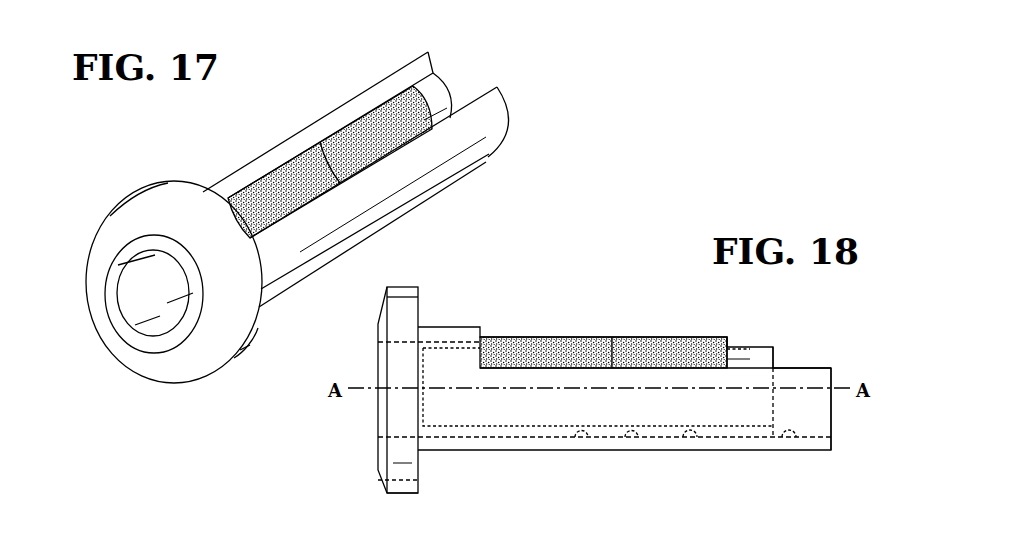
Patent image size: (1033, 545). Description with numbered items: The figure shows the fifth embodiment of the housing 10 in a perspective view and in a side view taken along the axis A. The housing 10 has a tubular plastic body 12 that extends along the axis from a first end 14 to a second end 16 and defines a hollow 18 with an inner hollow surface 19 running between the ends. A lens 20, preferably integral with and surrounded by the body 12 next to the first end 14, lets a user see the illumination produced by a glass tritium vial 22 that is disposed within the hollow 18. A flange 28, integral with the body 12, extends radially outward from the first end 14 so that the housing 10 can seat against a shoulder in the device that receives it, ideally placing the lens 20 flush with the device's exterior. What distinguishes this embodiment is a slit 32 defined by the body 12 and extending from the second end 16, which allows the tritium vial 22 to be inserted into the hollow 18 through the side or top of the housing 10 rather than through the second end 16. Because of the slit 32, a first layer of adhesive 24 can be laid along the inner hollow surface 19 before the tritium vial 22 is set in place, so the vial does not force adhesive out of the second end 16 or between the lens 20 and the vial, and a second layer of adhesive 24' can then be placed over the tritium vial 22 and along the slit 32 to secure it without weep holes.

In FIG. 17, the housing 10 is at (270, 124).
In FIG. 18, the housing 10 is at (662, 320).
In FIG. 17, the body 12 is at (480, 167).
In FIG. 18, the body 12 is at (495, 451).
In FIG. 17, the first end 14 is at (87, 274).
In FIG. 18, the first end 14 is at (385, 480).
In FIG. 17, the second end 16 is at (504, 103).
In FIG. 18, the second end 16 is at (832, 444).
In FIG. 17, the hollow 18 is at (432, 81).
In FIG. 18, the hollow 18 is at (798, 440).
In FIG. 18, the inner hollow surface 19 is at (640, 440).
In FIG. 17, the lens 20 is at (500, 73).
In FIG. 17, the tritium vial 22 is at (429, 91).
In FIG. 18, the tritium vial 22 is at (582, 440).
In FIG. 17, the adhesive 24 is at (155, 334).
In FIG. 18, the adhesive 24 is at (598, 434).
In FIG. 17, the second layer of adhesive 24' is at (330, 146).
In FIG. 18, the second layer of adhesive 24' is at (603, 314).
In FIG. 17, the flange 28 is at (243, 348).
In FIG. 18, the flange 28 is at (400, 494).
In FIG. 17, the slit 32 is at (320, 142).
In FIG. 18, the slit 32 is at (612, 337).